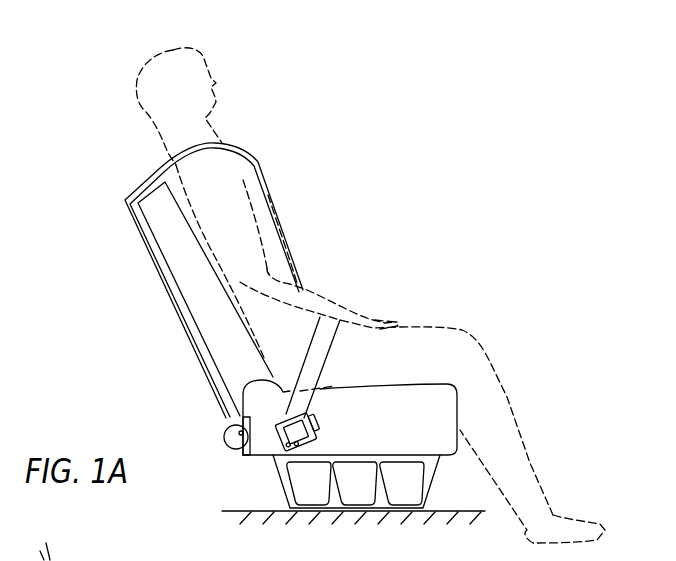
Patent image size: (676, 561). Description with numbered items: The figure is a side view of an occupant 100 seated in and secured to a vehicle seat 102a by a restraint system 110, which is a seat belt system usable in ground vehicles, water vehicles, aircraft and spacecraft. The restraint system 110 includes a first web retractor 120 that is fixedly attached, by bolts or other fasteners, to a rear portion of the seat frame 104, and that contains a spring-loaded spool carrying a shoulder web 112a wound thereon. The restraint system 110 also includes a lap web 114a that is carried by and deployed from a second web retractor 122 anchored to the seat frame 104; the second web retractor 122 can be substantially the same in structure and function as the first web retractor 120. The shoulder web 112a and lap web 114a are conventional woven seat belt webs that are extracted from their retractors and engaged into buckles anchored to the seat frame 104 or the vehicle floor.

The occupant 100 is at (173, 50).
The restraint system 110 is at (305, 331).
The shoulder web 112a is at (248, 150).
The vehicle seat 102a is at (443, 385).
The seat frame 104 is at (282, 486).
The lap web 114a is at (307, 409).
The second web retractor 122 is at (313, 437).
The first web retractor 120 is at (230, 428).